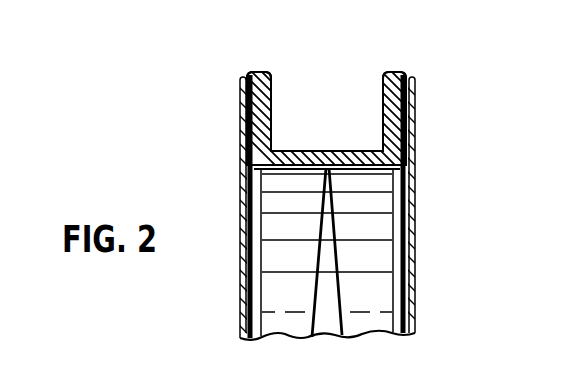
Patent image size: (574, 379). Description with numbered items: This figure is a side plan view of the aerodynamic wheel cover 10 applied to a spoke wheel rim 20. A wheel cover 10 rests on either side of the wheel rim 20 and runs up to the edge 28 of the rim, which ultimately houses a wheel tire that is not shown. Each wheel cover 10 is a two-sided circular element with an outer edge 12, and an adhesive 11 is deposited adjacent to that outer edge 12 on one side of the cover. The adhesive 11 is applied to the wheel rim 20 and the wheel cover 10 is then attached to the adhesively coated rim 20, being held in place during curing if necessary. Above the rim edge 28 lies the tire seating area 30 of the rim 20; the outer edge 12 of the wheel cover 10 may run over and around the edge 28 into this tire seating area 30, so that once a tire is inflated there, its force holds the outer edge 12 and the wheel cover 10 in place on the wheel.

The aerodynamic wheel cover 10 is at (239, 173).
The adhesive 11 is at (254, 76).
The outer edge 12 is at (245, 99).
The wheel rim 20 is at (410, 121).
The edge of the rim 28 is at (394, 76).
The tire seating area 30 is at (336, 108).